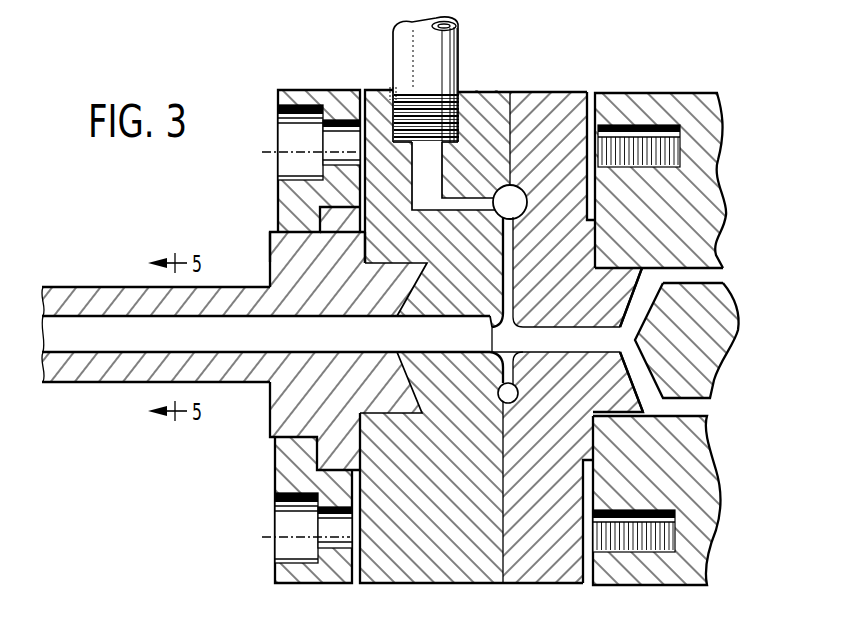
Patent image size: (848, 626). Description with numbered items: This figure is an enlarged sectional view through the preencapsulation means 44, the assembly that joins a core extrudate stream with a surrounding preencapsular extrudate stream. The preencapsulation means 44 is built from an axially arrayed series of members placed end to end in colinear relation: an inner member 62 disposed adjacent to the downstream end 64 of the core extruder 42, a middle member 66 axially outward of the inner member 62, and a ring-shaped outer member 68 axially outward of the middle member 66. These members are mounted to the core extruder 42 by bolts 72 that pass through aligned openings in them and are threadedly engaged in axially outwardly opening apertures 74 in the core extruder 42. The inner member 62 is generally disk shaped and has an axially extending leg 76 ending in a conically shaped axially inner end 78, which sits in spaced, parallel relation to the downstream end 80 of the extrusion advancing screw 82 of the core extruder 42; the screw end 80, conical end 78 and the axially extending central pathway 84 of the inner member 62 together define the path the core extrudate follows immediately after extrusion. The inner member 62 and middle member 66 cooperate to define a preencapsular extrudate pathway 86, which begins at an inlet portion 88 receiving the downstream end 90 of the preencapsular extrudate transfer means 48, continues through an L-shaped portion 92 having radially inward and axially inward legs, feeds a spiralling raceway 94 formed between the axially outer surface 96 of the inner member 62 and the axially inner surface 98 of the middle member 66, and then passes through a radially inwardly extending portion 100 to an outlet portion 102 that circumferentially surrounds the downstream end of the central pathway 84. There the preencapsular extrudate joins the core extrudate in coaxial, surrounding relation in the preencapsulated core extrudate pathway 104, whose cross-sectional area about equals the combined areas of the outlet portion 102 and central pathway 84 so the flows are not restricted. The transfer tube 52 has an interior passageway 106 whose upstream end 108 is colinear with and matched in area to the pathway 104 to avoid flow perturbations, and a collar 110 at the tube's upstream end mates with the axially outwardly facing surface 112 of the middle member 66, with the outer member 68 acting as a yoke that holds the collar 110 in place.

The core extruder 42 is at (700, 90).
The preencapsulation means 44 is at (260, 457).
The preencapsular extrudate transfer means 48 is at (474, 34).
The transfer tube 52 is at (103, 388).
The inner member 62 is at (550, 592).
The downstream end of core extruder 64 is at (592, 92).
The middle member 66 is at (409, 589).
The outer member 68 is at (314, 589).
The bolts 72 is at (285, 150).
The apertures 74 is at (642, 548).
The axially extending leg 76 is at (650, 266).
The conically shaped axially inner end 78 is at (635, 310).
The downstream end of extrusion advancing screw 80 is at (663, 283).
The extrusion advancing screw 82 is at (728, 356).
The central pathway 84 is at (578, 353).
The preencapsular extrudate pathway 86 is at (451, 189).
The inlet portion 88 is at (395, 87).
The downstream end of preencapsular extrudate transfer means 90 is at (458, 63).
The L-shaped portion 92 is at (437, 203).
The spiralling raceway 94 is at (521, 214).
The axially outer surface of inner member 96 is at (503, 550).
The axially inner surface of middle member 98 is at (505, 524).
The radially inwardly extending portion 100 is at (510, 270).
The outlet portion 102 is at (490, 350).
The preencapsulated core extrudate pathway 104 is at (416, 351).
The interior passageway 106 is at (88, 322).
The upstream end of interior passageway 108 is at (375, 318).
The collar 110 is at (365, 244).
The axially outwardly facing surface of middle member 112 is at (270, 253).